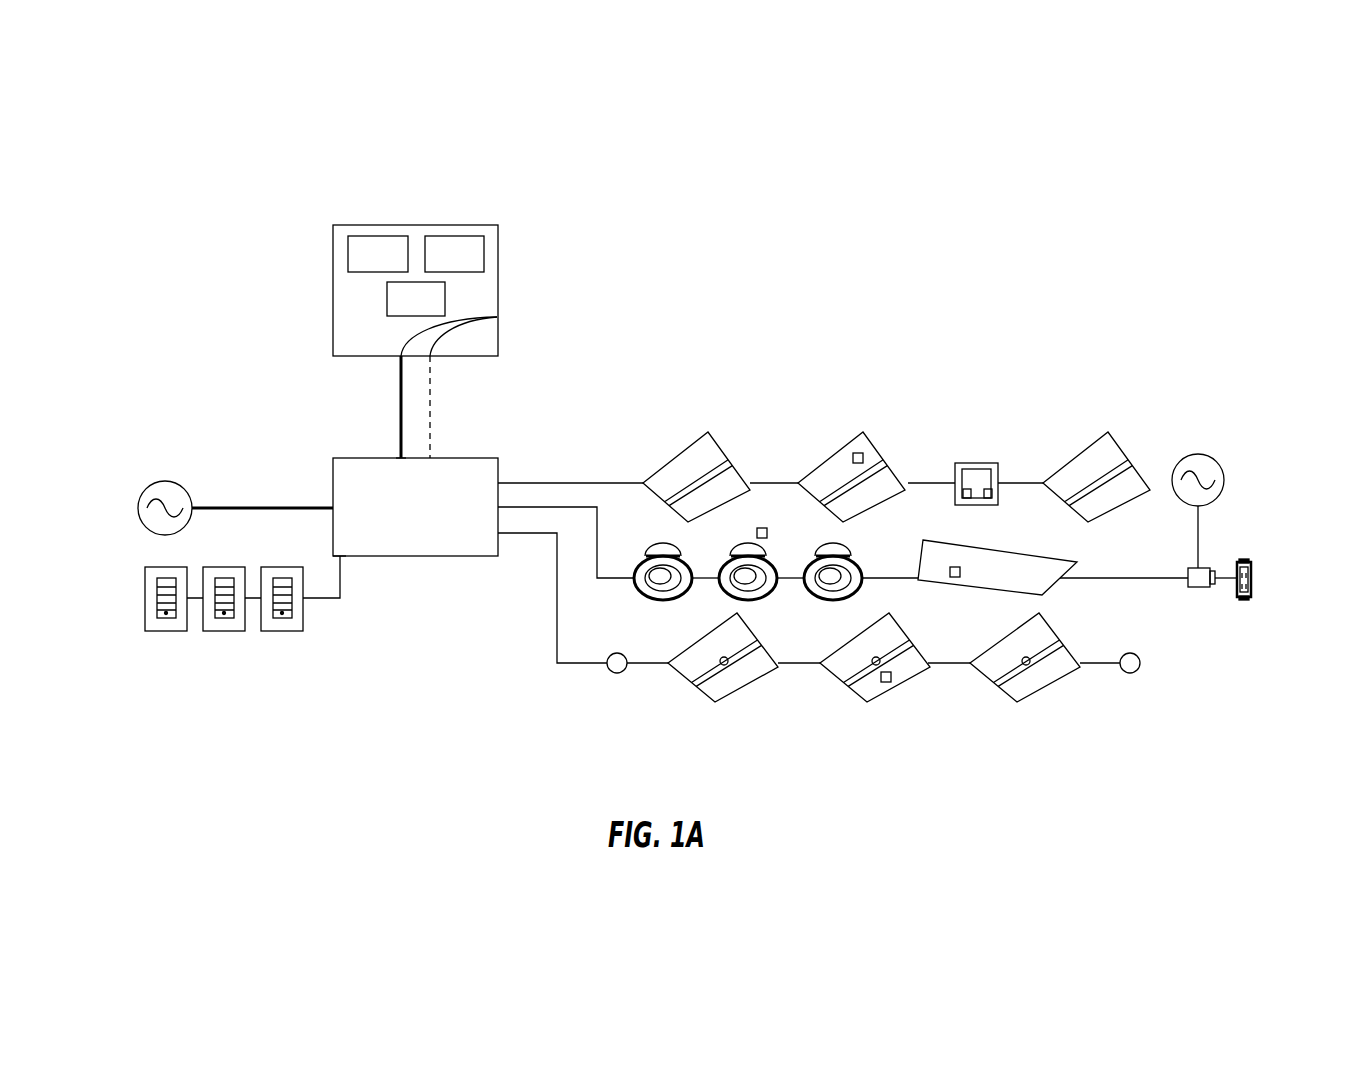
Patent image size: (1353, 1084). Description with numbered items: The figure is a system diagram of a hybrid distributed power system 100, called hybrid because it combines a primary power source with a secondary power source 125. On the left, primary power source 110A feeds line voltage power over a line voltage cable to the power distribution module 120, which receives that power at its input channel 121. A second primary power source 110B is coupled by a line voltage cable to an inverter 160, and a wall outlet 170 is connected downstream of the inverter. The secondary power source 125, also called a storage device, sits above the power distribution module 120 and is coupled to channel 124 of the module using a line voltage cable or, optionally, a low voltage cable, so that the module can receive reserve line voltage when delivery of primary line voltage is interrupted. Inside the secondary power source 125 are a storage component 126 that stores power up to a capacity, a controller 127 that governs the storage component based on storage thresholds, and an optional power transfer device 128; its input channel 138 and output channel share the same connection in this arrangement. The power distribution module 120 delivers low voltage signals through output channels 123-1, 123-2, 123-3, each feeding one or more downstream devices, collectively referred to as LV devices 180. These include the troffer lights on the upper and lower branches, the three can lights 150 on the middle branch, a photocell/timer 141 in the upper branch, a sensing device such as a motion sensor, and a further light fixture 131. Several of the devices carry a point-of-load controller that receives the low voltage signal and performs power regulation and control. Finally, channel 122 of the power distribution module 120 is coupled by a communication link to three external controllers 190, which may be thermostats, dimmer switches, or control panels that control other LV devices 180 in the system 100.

The hybrid distributed power system 100 is at (1103, 233).
The primary power source 110A is at (164, 481).
The primary power source 110B is at (1225, 478).
The power distribution module (PDM) 120 is at (333, 459).
The input channel 121 is at (333, 506).
The channel 122 is at (342, 557).
The output channel 123-1 is at (502, 482).
The output channel 123-2 is at (500, 507).
The output channel 123-3 is at (501, 535).
The channel 124 is at (400, 457).
The secondary power source 125 is at (333, 251).
The storage component 126 is at (400, 269).
The controller 127 is at (477, 269).
The power transfer device 128 is at (438, 313).
The light fixture 131 is at (1010, 543).
The input channel 138 is at (497, 317).
The photocell/timer 141 is at (975, 462).
The can light 150 is at (667, 600).
The inverter 160 is at (1200, 588).
The wall outlet 170 is at (1252, 578).
The LV devices 180 is at (1177, 393).
The external controller 190 is at (166, 631).